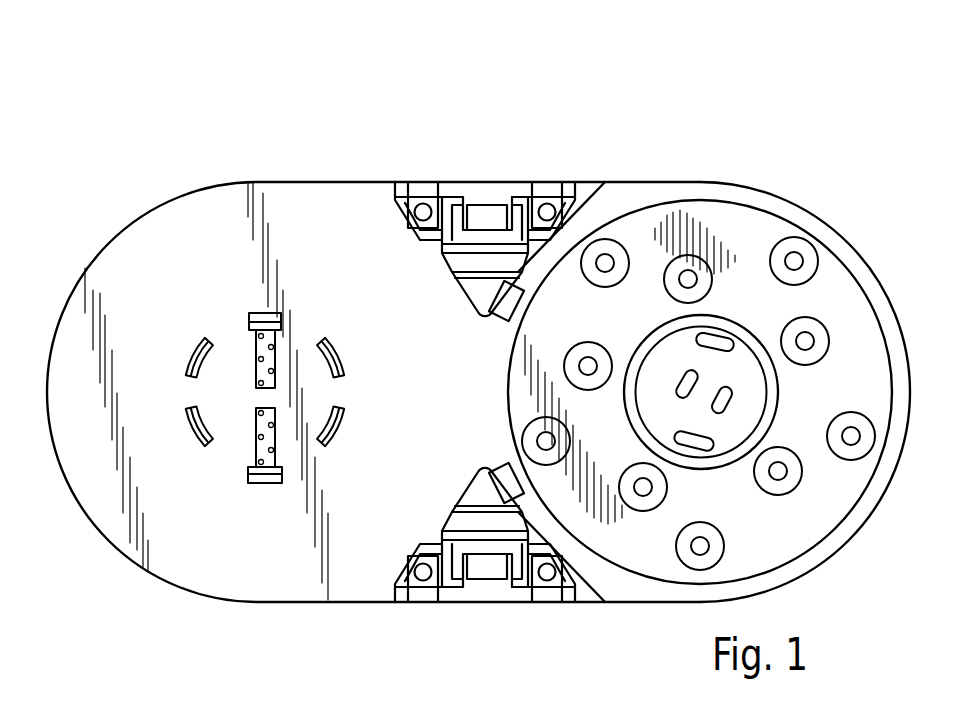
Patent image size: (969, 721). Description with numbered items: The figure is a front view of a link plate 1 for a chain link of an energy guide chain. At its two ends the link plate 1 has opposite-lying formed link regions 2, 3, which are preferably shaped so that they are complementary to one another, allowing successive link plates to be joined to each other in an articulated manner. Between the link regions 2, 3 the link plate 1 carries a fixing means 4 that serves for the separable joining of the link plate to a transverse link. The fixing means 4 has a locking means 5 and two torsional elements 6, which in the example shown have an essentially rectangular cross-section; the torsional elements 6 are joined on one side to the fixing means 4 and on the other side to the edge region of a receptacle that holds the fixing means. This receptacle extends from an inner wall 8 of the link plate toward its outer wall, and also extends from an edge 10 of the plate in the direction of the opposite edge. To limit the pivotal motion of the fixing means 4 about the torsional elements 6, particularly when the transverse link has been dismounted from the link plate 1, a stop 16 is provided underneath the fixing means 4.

The link plate 1 is at (219, 127).
The link region 2 is at (506, 107).
The link region 3 is at (122, 232).
The fixing means 4 is at (587, 76).
The locking means 5 is at (472, 195).
The torsional elements 6 is at (440, 190).
The inner wall 8 is at (288, 250).
The edge 10 is at (685, 181).
The stop 16 is at (490, 250).